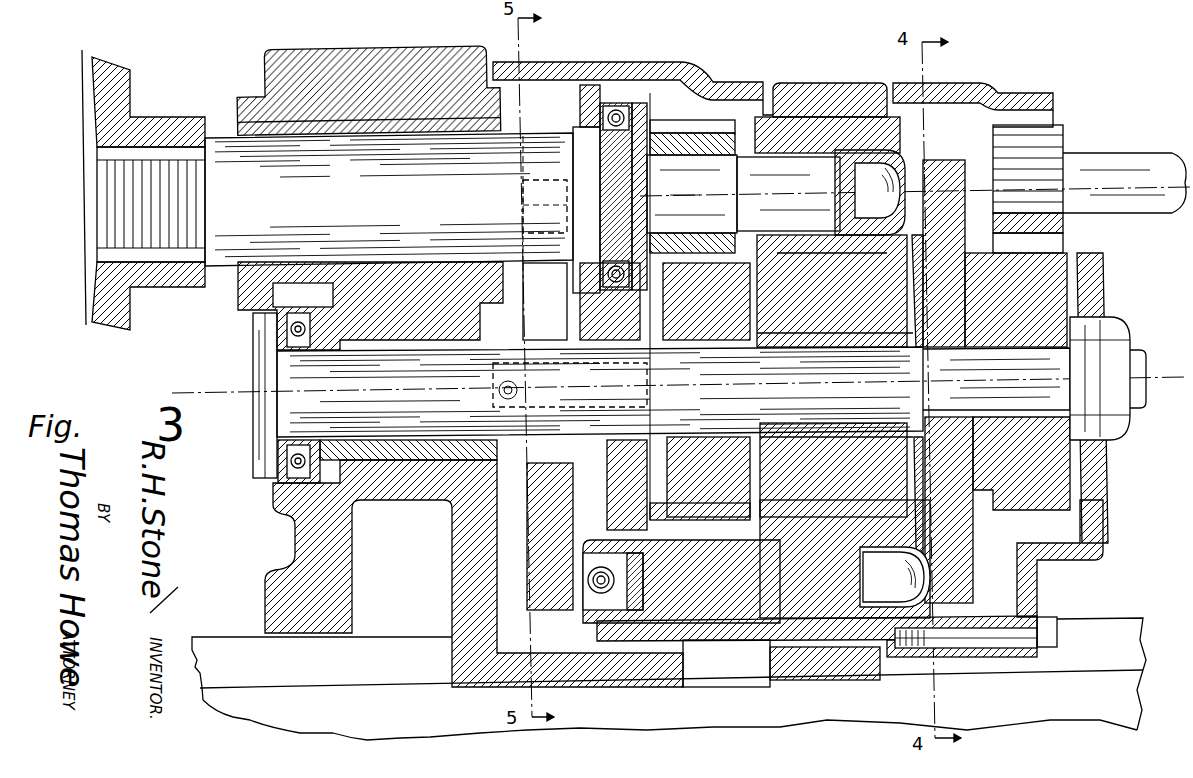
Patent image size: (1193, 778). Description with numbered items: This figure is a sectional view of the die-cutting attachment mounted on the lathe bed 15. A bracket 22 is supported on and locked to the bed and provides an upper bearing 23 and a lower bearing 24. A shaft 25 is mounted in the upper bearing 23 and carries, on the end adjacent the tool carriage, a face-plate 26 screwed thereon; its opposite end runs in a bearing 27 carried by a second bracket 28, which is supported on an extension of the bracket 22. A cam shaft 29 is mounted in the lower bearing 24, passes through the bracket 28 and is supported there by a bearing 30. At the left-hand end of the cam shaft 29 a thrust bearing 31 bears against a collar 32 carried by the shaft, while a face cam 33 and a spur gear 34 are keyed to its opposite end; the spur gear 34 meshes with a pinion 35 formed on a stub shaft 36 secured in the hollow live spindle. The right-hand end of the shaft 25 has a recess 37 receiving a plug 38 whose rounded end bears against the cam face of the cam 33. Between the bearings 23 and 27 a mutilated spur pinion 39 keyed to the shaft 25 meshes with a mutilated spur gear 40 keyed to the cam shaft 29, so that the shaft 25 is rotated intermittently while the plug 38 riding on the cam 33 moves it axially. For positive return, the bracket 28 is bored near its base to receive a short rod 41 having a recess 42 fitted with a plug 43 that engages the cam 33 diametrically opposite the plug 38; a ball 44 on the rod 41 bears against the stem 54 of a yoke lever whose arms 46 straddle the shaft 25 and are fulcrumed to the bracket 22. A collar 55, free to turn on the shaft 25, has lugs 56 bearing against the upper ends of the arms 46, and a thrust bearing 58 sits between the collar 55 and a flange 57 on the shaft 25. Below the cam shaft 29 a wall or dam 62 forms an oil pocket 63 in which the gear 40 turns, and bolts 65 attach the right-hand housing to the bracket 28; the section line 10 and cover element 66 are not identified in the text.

The section plane 10 is at (640, 90).
The bed 15 is at (230, 665).
The bracket 22 is at (305, 549).
The upper bearing 23 is at (246, 118).
The lower bearing 24 is at (503, 340).
The shaft 25 is at (402, 210).
The face-plate 26 is at (100, 112).
The bearing 27 is at (900, 138).
The bracket 28 is at (897, 283).
The cam shaft 29 is at (673, 392).
The bearing 30 is at (862, 425).
The thrust bearing 31 is at (278, 335).
The collar 32 is at (266, 368).
The face cam 33 is at (945, 172).
The spur gear 34 is at (1060, 485).
The pinion 35 is at (1047, 145).
The stub shaft 36 is at (1093, 162).
The recess 37 is at (898, 180).
The plug 38 is at (870, 193).
The mutilated spur pinion 39 is at (712, 135).
The mutilated spur gear 40 is at (720, 437).
The rod 41 is at (757, 640).
The recess 42 is at (893, 577).
The plug 43 is at (917, 566).
The ball 44 is at (590, 612).
The arms 46 is at (581, 301).
The stem 54 is at (555, 492).
The collar 55 is at (580, 104).
The lugs 56 is at (569, 212).
The flange 57 is at (648, 190).
The thrust bearing 58 is at (615, 128).
The wall or dam 62 is at (612, 492).
The oil pocket 63 is at (660, 478).
The bolts 65 is at (1057, 632).
The cover plate 66 is at (957, 83).